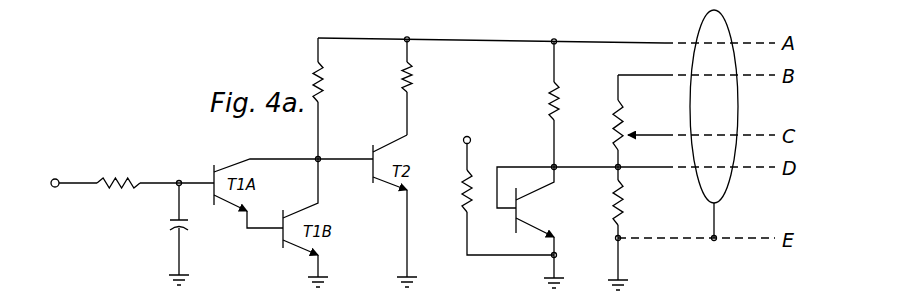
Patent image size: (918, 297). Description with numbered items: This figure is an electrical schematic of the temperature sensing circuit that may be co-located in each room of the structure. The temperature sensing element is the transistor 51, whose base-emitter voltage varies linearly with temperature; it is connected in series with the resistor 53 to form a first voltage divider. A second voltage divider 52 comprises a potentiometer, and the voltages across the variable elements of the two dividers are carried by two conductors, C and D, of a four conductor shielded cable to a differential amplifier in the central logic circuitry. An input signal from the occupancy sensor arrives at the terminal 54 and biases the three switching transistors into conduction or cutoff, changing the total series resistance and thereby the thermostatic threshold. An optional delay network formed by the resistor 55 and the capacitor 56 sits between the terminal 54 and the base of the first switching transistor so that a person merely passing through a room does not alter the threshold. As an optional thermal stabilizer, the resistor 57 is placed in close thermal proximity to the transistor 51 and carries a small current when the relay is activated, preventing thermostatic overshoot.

The transistor 51 is at (512, 213).
The second voltage divider 52 is at (620, 170).
The resistor 53 is at (548, 97).
The terminal 54 is at (48, 186).
The resistor 55 is at (120, 190).
The capacitor 56 is at (170, 224).
The resistor 57 is at (461, 190).